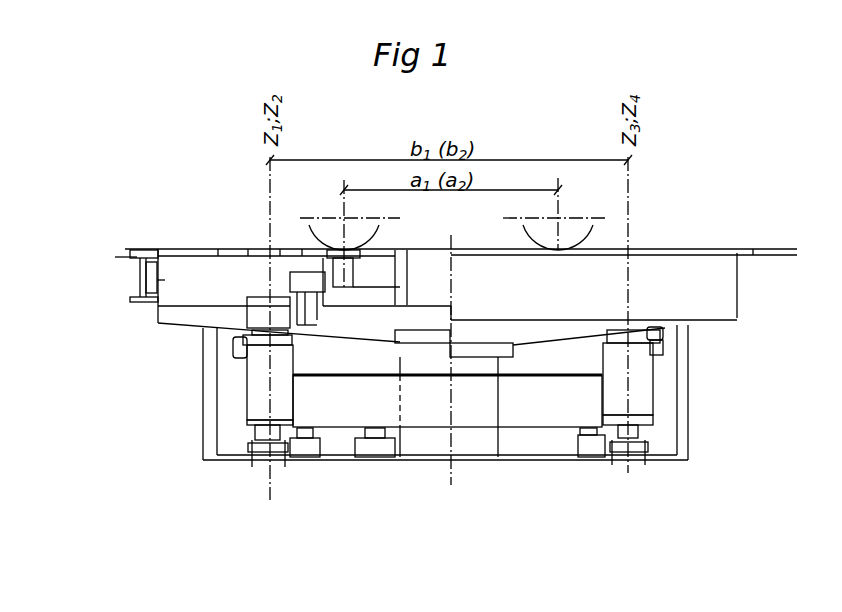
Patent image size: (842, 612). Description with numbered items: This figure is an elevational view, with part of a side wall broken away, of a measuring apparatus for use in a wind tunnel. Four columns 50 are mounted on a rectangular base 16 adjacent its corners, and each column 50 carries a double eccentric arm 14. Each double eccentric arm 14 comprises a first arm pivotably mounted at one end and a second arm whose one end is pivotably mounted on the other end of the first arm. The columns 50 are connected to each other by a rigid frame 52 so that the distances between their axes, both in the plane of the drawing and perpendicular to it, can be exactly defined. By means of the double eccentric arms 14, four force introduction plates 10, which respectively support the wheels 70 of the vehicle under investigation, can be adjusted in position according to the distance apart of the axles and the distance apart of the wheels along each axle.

The wheel 70 is at (458, 214).
The force introduction plate 10 is at (436, 255).
The double eccentric arm 14 is at (406, 312).
The column 50 is at (458, 382).
The rigid frame 52 is at (566, 401).
The base 16 is at (381, 392).